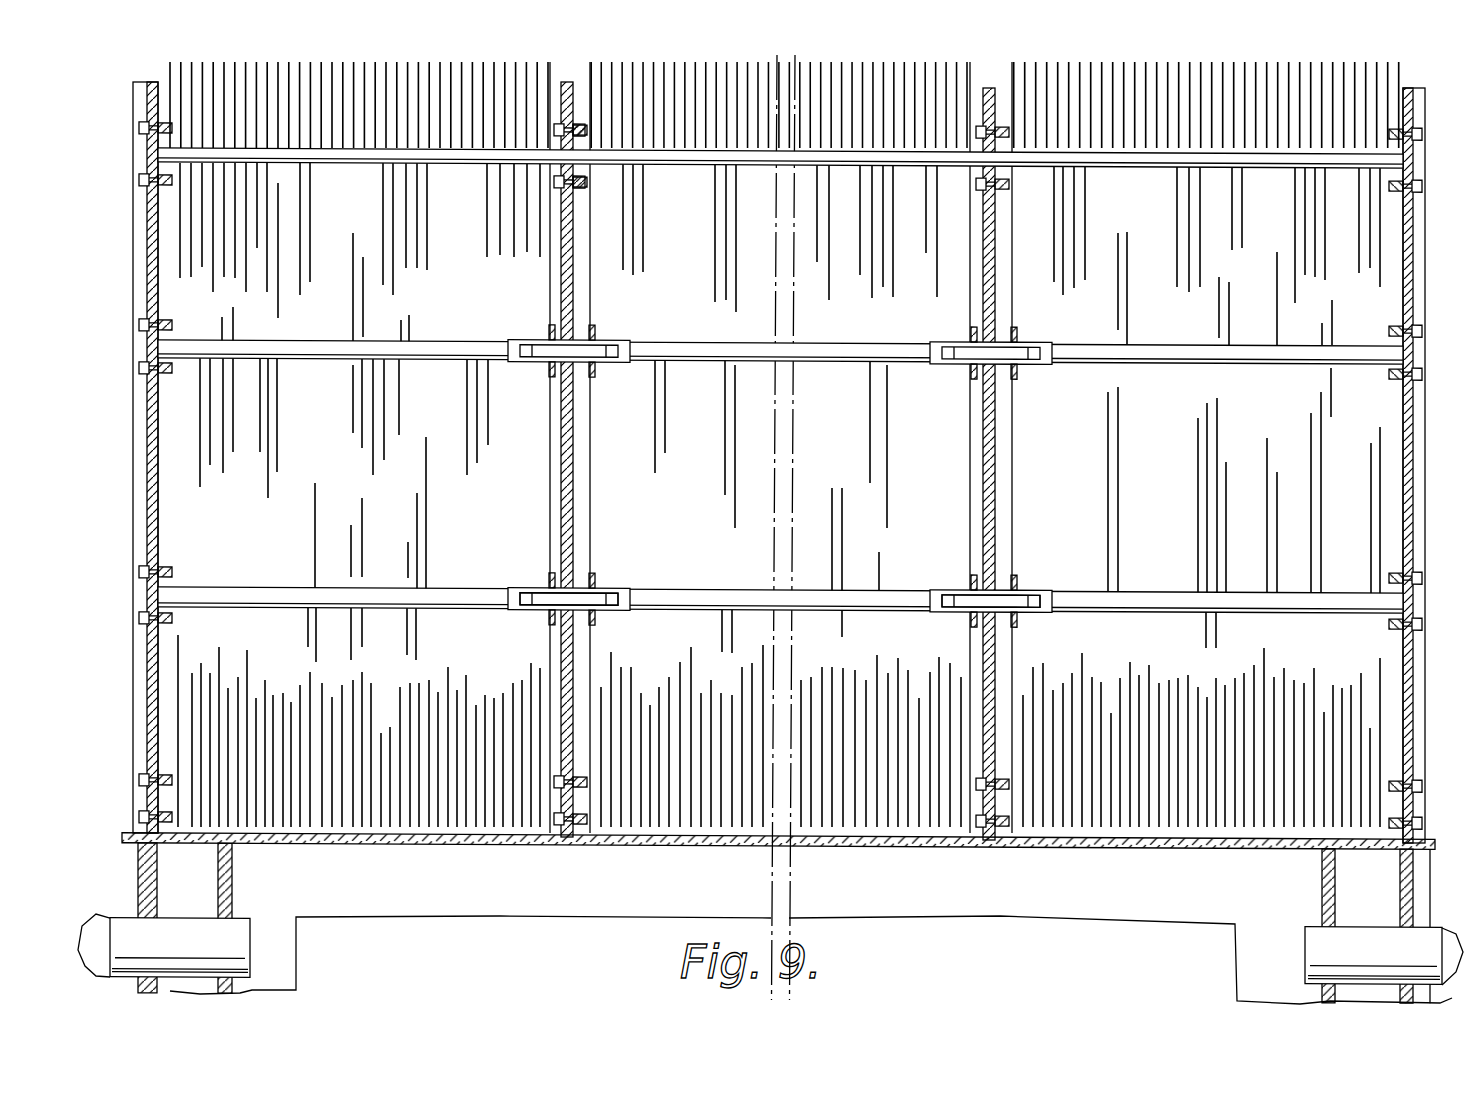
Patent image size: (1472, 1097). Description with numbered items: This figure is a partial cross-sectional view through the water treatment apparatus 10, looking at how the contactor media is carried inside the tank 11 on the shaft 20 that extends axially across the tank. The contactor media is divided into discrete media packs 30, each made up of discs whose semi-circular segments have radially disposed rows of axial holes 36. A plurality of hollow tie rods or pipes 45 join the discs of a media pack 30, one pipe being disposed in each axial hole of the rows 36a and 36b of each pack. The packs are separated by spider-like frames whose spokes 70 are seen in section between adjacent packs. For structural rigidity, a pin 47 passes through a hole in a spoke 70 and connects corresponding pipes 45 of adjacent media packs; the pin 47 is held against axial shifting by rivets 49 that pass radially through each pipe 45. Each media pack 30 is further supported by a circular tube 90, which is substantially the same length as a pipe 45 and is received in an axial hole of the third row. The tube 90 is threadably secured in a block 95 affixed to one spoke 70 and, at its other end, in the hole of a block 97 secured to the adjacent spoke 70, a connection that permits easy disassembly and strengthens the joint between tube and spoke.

The water treatment apparatus 10 is at (100, 345).
The tank 11 is at (104, 150).
The shaft 20 is at (125, 916).
The media pack 30 is at (205, 72).
The rows of axial holes 36 is at (1408, 160).
The first row of axial holes 36a is at (1413, 596).
The second row of axial holes 36b is at (1412, 352).
The hollow tie rod or pipe 45 is at (200, 345).
The pin 47 is at (576, 580).
The rivet 49 is at (522, 608).
The spoke 70 is at (567, 82).
The circular tube 90 is at (344, 143).
The block 95 is at (556, 124).
The block 97 is at (584, 126).